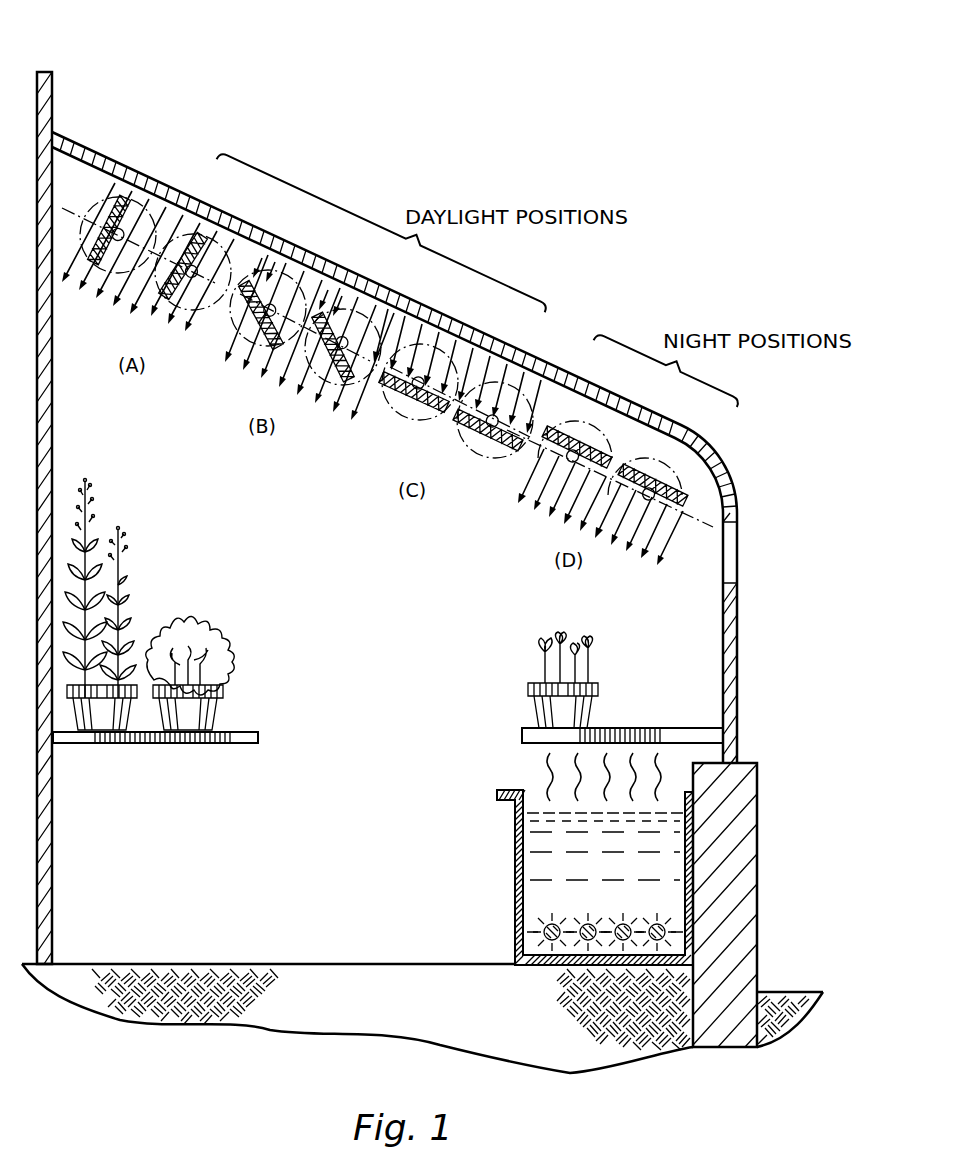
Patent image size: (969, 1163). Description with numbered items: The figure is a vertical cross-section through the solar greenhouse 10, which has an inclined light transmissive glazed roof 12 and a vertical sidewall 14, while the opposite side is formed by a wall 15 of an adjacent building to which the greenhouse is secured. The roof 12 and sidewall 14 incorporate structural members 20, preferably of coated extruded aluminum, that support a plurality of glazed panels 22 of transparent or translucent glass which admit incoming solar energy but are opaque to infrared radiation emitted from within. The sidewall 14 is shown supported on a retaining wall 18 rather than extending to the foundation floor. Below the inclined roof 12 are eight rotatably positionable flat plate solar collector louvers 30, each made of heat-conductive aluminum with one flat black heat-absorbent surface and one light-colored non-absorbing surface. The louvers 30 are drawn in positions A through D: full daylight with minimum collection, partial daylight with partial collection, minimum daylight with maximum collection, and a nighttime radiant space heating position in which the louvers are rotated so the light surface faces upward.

The solar greenhouse 10 is at (28, 97).
The inclined light transmissive glazed roof 12 is at (607, 391).
The vertical sidewall 14 is at (738, 628).
The wall of a structure 15 is at (53, 864).
The retaining wall 18 is at (758, 937).
The structural members 20 is at (725, 567).
The glazed panels 22 is at (124, 162).
The flat plate solar collector louvers 30 is at (266, 294).